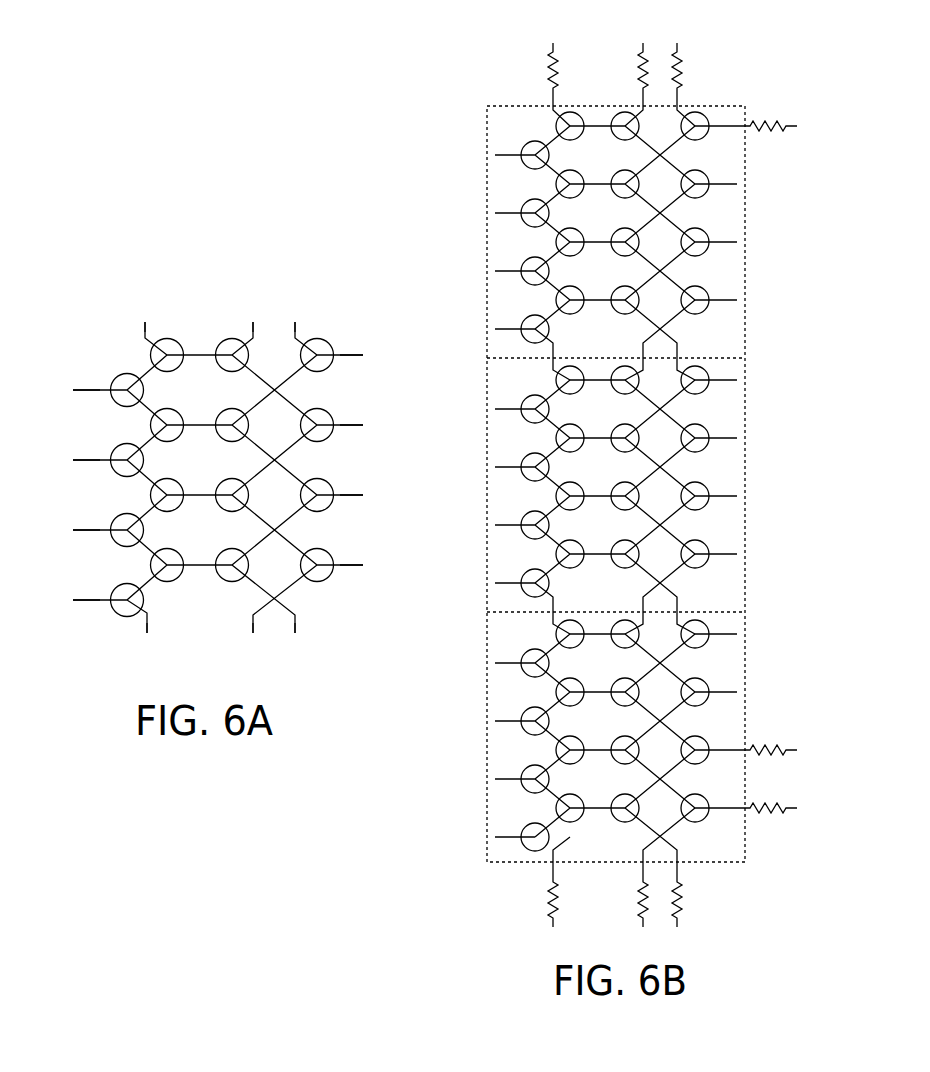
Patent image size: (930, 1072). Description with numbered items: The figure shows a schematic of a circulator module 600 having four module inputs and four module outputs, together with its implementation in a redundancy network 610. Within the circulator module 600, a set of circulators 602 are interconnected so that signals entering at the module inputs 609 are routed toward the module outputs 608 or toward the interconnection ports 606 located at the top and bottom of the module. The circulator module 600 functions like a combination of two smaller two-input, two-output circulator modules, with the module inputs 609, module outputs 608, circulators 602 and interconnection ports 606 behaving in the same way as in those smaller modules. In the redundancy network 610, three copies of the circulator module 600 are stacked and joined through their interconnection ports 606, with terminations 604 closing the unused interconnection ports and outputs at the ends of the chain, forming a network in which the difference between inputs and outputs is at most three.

In FIG. 6A, the circulator module 600 is at (259, 248).
In FIG. 6B, the circulator module 600 is at (486, 176).
In FIG. 6A, the circulator 602 is at (114, 379).
In FIG. 6B, the termination resistor 604 is at (549, 74).
In FIG. 6A, the interconnection port 606 is at (145, 328).
In FIG. 6A, the module output 608 is at (347, 353).
In FIG. 6A, the module input 609 is at (86, 392).
In FIG. 6B, the redundancy network 610 is at (410, 130).